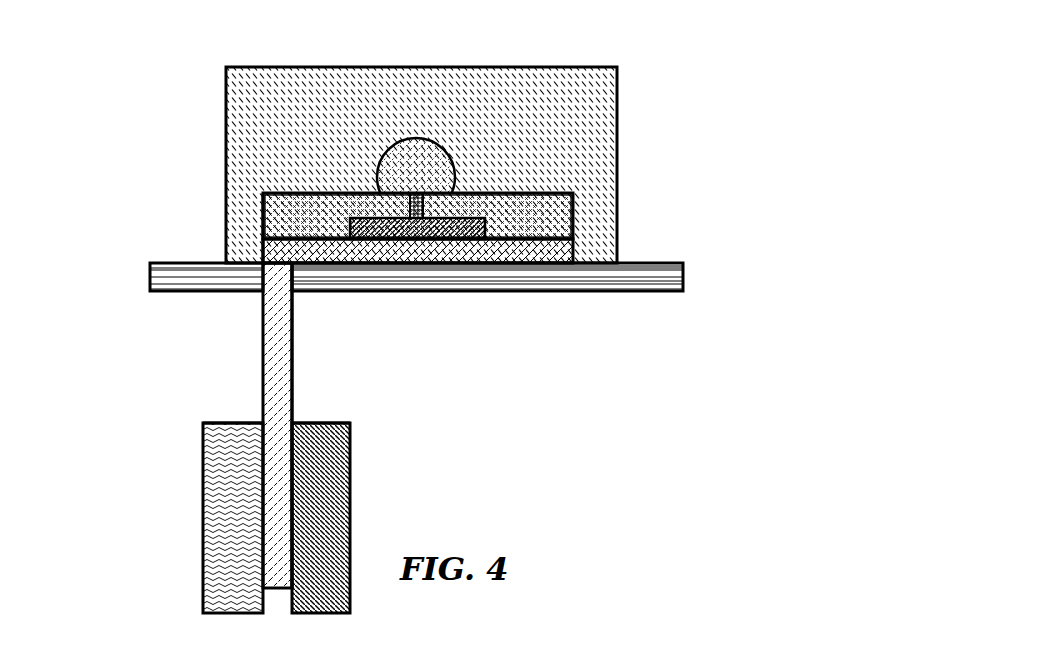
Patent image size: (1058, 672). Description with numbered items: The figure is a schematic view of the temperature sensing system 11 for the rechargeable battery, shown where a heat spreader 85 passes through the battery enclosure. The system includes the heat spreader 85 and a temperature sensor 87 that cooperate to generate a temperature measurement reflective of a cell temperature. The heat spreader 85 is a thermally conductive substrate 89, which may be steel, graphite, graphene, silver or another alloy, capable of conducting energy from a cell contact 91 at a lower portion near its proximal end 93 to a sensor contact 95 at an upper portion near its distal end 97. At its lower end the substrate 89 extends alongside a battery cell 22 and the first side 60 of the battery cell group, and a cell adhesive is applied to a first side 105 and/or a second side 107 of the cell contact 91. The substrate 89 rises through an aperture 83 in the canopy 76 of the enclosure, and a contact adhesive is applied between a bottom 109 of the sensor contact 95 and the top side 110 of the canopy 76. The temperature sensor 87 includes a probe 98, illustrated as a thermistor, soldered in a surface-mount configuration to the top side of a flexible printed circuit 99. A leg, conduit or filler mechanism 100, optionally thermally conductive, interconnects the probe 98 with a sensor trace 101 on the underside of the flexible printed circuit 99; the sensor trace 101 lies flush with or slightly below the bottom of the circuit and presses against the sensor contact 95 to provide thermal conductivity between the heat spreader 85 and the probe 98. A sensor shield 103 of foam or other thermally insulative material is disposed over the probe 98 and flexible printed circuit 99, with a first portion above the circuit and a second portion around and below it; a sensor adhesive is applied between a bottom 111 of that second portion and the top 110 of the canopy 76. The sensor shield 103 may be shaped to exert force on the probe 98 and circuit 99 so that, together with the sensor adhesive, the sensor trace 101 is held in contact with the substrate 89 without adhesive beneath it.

The temperature sensing system 11 is at (656, 615).
The battery cell 22 is at (350, 525).
The first side 60 is at (203, 527).
The canopy 76 is at (657, 262).
The aperture 83 is at (258, 292).
The heat spreader 85 is at (262, 252).
The temperature sensor 87 is at (262, 213).
The thermally conductive substrate 89 is at (570, 250).
The cell contact 91 is at (296, 476).
The proximal end 93 is at (277, 590).
The sensor contact 95 is at (415, 266).
The distal end 97 is at (578, 251).
The probe 98 is at (382, 152).
The flexible printed circuit 99 is at (347, 190).
The leg 100 is at (425, 207).
The sensor trace 101 is at (485, 223).
The sensor shield 103 is at (226, 87).
The first side 105 is at (293, 447).
The second side 107 is at (262, 447).
The bottom 109 is at (488, 264).
The top side 110 is at (585, 249).
The bottom 111 is at (243, 263).